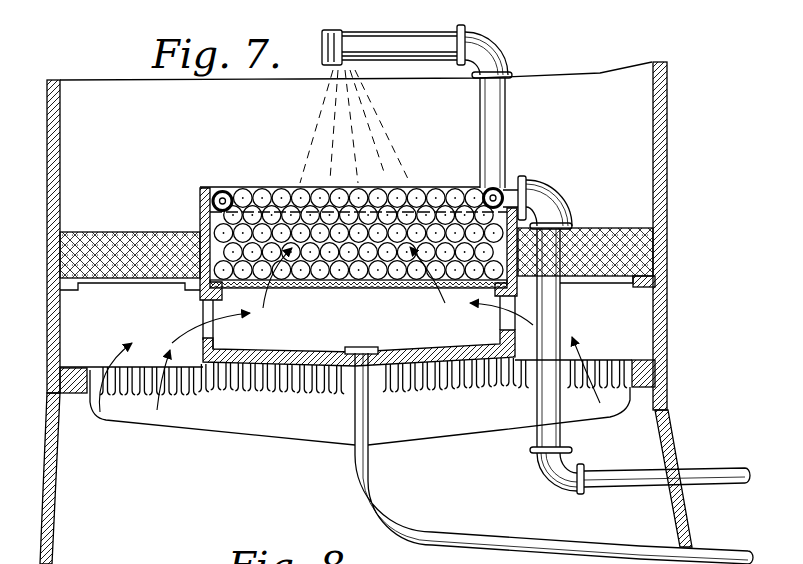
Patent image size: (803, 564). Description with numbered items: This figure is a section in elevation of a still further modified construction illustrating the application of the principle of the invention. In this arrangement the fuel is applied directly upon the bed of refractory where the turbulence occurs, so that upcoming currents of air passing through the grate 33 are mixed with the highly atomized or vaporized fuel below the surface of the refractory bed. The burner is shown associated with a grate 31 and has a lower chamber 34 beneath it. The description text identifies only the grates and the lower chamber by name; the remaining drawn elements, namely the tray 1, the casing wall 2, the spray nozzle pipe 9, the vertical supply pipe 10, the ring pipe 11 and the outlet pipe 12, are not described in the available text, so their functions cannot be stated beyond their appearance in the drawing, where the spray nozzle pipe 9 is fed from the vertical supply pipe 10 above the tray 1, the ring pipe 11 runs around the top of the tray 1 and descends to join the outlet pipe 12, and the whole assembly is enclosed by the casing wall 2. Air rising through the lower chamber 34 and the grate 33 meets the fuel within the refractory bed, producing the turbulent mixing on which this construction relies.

The tray 1 is at (200, 203).
The casing wall 2 is at (657, 125).
The spray nozzle pipe 9 is at (393, 60).
The vertical supply pipe 10 is at (493, 137).
The ring pipe 11 is at (229, 190).
The outlet pipe 12 is at (606, 473).
The grate 31 is at (263, 423).
The grate 33 is at (342, 286).
The lower chamber 34 is at (237, 350).